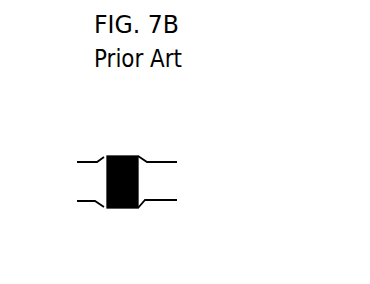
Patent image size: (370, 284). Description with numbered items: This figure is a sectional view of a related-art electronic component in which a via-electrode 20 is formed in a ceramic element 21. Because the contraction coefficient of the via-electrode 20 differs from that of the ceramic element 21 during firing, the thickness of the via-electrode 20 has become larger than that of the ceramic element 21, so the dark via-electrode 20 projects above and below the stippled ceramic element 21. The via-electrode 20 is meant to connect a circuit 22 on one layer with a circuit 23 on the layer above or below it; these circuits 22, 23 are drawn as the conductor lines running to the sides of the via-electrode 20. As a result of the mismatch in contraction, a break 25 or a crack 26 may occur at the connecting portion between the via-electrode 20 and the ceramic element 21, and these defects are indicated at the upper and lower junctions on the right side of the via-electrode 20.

The via-electrode 20 is at (106, 180).
The ceramic element 21 is at (170, 170).
The circuit 22 is at (90, 203).
The circuit 23 is at (99, 160).
The break 25 is at (140, 156).
The crack 26 is at (145, 180).